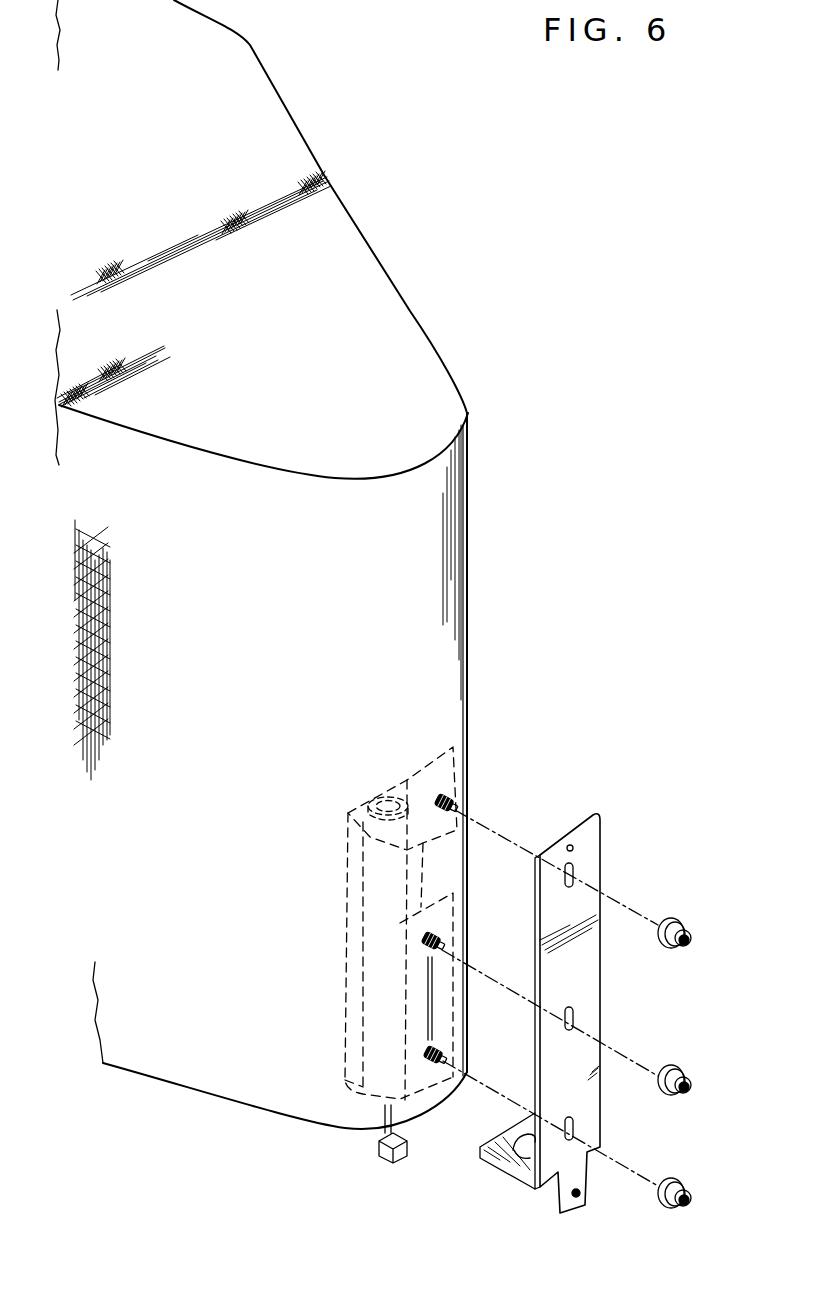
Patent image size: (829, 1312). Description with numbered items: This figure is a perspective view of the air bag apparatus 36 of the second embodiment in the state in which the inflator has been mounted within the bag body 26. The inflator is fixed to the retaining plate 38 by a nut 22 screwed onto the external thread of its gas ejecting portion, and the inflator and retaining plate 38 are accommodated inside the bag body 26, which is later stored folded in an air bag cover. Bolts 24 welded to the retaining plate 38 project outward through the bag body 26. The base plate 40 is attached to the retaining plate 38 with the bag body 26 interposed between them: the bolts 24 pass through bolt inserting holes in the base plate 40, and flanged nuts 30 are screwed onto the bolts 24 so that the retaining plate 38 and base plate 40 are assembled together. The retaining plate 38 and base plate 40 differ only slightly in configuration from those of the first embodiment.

The nut 22 is at (371, 798).
The bolts 24 is at (450, 795).
The bag body 26 is at (406, 311).
The flanged nuts 30 is at (691, 942).
The air bag apparatus 36 is at (661, 473).
The retaining plate 38 is at (347, 906).
The base plate 40 is at (601, 851).